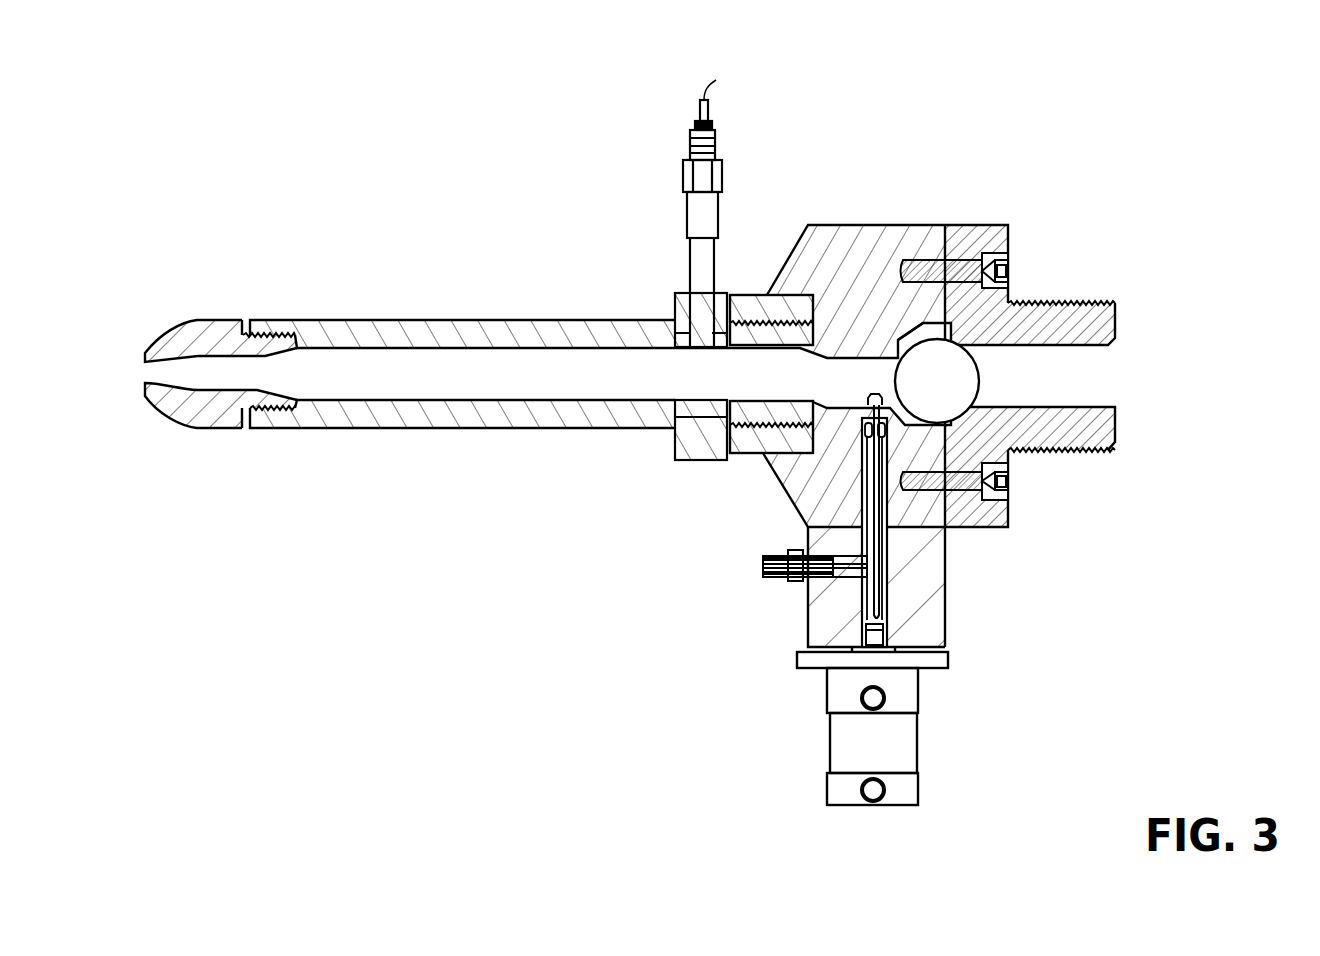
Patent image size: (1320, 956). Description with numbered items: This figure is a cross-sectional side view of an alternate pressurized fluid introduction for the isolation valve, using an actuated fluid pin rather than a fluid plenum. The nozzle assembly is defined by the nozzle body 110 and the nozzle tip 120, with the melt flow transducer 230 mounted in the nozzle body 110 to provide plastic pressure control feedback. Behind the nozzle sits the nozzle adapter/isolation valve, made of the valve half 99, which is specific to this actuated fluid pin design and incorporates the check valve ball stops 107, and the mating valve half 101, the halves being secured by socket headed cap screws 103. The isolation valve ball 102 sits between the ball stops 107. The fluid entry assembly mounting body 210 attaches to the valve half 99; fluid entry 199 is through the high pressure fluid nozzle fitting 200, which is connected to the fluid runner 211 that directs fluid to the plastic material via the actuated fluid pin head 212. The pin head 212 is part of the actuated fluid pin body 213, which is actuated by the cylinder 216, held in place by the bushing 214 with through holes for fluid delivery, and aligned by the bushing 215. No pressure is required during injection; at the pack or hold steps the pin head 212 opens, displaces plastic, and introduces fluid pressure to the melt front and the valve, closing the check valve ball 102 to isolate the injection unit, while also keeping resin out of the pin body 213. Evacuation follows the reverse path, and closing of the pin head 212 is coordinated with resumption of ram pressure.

The nozzle adapter/isolation valve half 99 is at (826, 252).
The nozzle adapter/isolation valve half 101 is at (962, 236).
The isolation valve ball 102 is at (958, 378).
The socket headed cap screw 103 is at (978, 268).
The check valve ball stop 107 is at (898, 340).
The nozzle body 110 is at (330, 336).
The nozzle tip 120 is at (185, 346).
The fluid entry 199 is at (763, 566).
The high pressure fluid nozzle fitting 200 is at (806, 582).
The fluid entry assembly mounting body 210 is at (910, 608).
The fluid runner 211 is at (867, 554).
The actuated fluid pin head 212 is at (872, 397).
The actuated fluid pin body 213 is at (873, 497).
The bushing 214 is at (882, 505).
The bushing 215 is at (883, 583).
The cylinder 216 is at (892, 742).
The melt flow transducer 230 is at (714, 97).